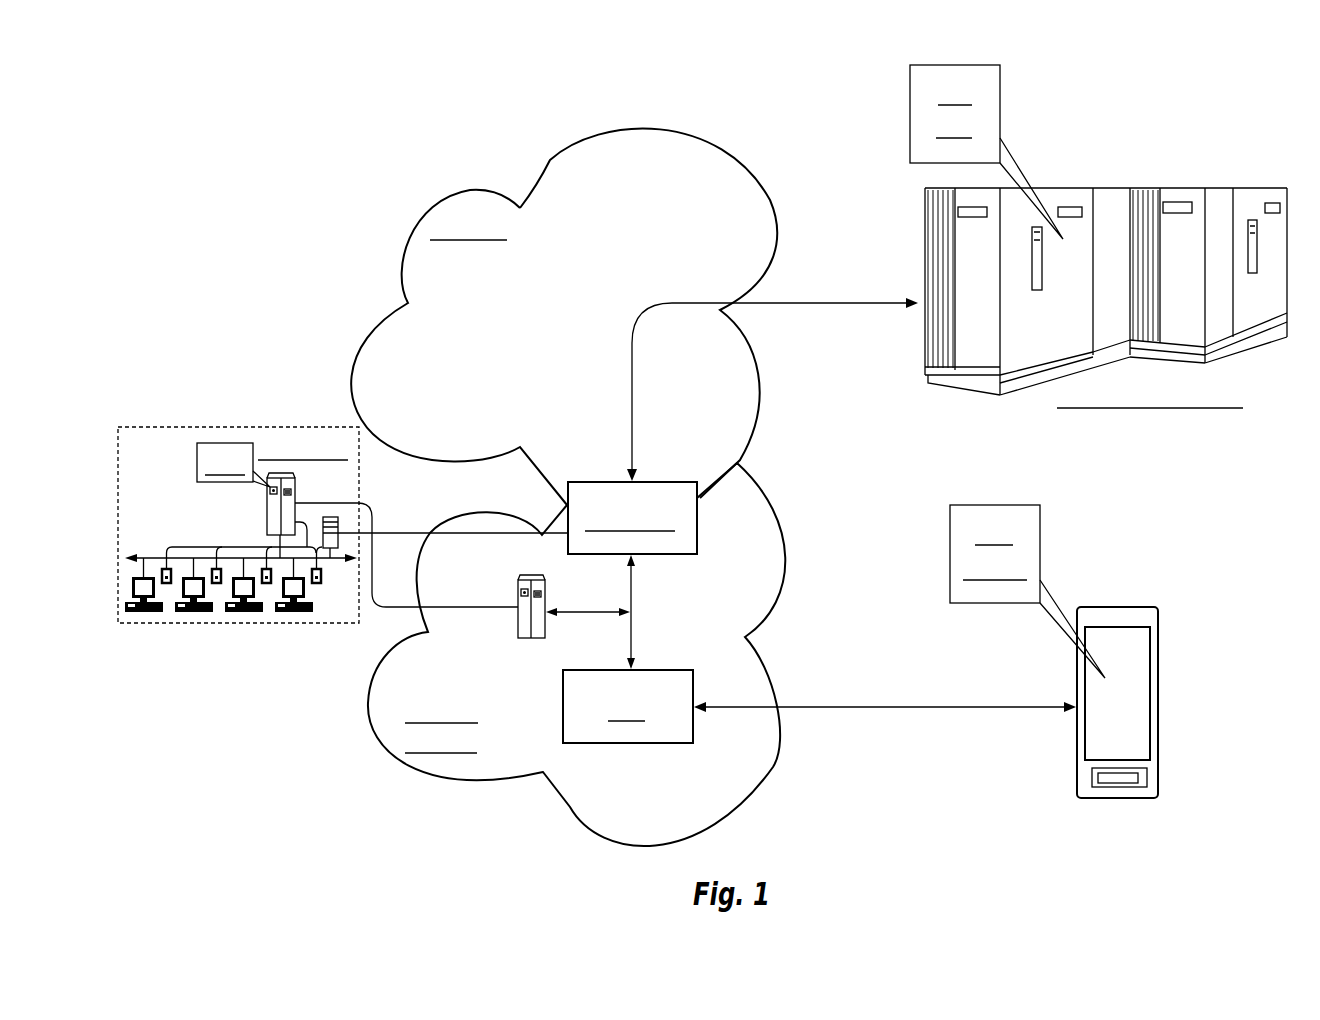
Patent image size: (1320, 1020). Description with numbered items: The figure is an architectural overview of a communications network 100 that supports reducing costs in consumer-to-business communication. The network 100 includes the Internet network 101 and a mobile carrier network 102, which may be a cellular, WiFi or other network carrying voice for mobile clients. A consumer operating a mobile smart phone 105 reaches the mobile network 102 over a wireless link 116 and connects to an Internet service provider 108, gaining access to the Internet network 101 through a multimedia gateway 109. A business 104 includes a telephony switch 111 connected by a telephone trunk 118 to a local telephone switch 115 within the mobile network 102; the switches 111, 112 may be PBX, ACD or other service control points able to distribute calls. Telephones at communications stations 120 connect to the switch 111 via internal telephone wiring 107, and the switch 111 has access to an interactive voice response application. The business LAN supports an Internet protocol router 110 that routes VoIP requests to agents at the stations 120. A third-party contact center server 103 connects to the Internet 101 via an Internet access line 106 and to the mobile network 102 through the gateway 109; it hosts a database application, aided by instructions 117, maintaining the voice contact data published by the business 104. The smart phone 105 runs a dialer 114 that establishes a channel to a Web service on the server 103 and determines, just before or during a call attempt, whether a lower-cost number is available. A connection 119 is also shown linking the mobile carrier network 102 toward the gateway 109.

The communications network 100 is at (291, 196).
The Internet network 101 is at (543, 177).
The mobile carrier network 102 is at (765, 662).
The contact center server 103 is at (910, 257).
The business 104 is at (206, 418).
The mobile smart phone 105 is at (1158, 698).
The Internet access line 106 is at (630, 369).
The internal telephone wiring 107 is at (198, 545).
The Internet service provider 108 is at (563, 712).
The multimedia gateway 109 is at (700, 515).
The Internet protocol router 110 is at (346, 514).
The telephony switch 111 is at (267, 513).
The switch 112 is at (225, 442).
The dialer 114 is at (992, 505).
The local telephone switch 115 is at (518, 597).
The wireless link 116 is at (923, 703).
The instructions 117 is at (1000, 102).
The telephone trunk 118 is at (400, 607).
The mobile carrier network connection 119 is at (433, 532).
The communications stations 120 is at (323, 609).